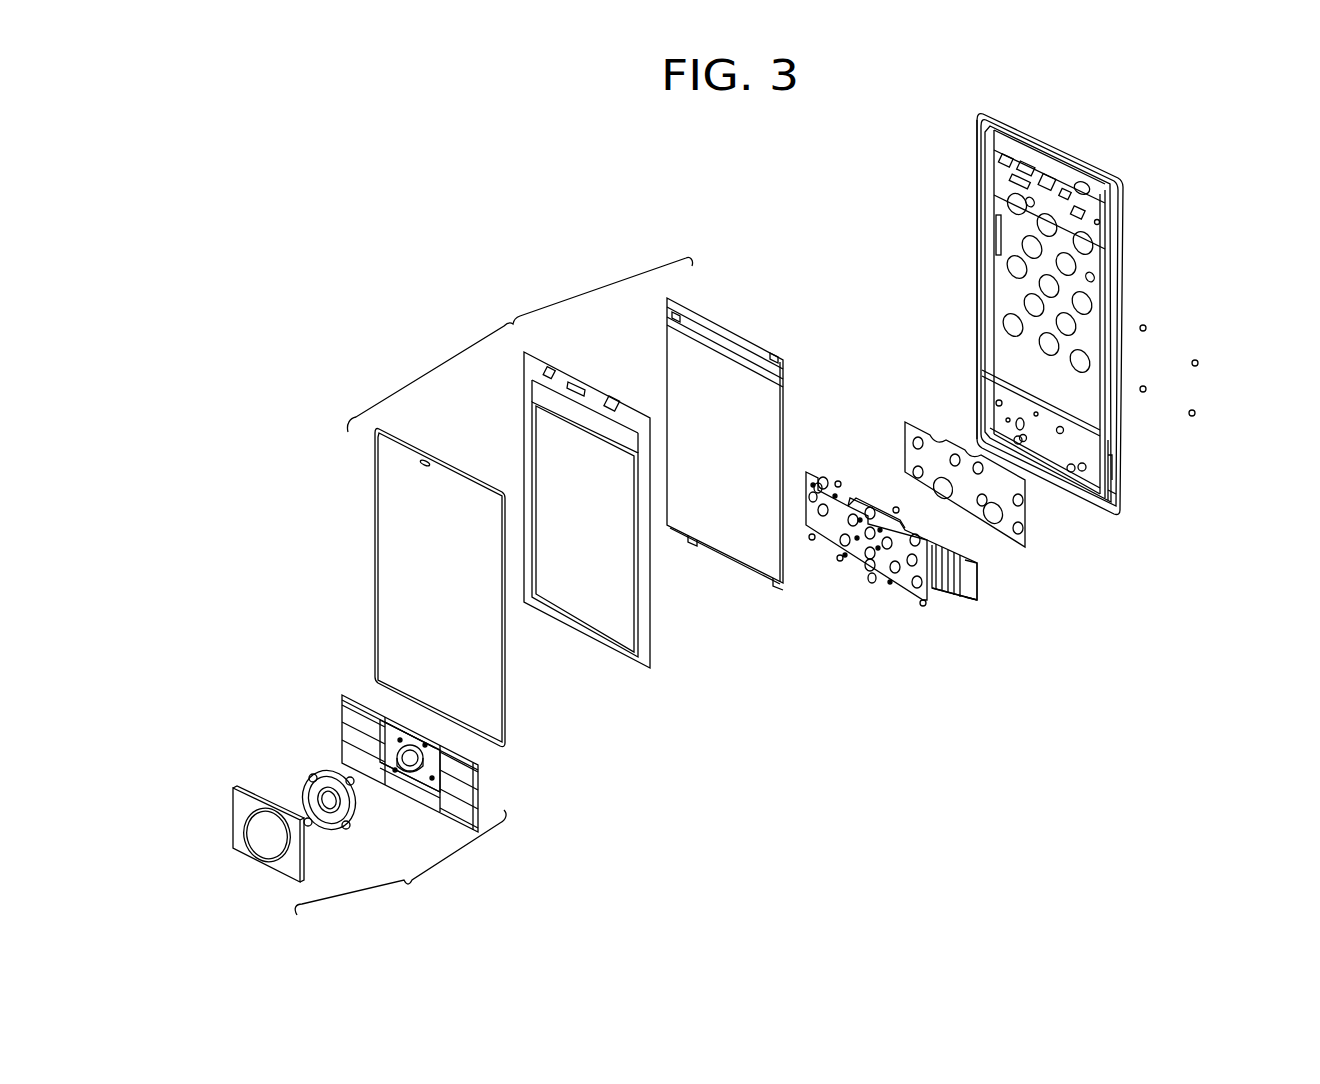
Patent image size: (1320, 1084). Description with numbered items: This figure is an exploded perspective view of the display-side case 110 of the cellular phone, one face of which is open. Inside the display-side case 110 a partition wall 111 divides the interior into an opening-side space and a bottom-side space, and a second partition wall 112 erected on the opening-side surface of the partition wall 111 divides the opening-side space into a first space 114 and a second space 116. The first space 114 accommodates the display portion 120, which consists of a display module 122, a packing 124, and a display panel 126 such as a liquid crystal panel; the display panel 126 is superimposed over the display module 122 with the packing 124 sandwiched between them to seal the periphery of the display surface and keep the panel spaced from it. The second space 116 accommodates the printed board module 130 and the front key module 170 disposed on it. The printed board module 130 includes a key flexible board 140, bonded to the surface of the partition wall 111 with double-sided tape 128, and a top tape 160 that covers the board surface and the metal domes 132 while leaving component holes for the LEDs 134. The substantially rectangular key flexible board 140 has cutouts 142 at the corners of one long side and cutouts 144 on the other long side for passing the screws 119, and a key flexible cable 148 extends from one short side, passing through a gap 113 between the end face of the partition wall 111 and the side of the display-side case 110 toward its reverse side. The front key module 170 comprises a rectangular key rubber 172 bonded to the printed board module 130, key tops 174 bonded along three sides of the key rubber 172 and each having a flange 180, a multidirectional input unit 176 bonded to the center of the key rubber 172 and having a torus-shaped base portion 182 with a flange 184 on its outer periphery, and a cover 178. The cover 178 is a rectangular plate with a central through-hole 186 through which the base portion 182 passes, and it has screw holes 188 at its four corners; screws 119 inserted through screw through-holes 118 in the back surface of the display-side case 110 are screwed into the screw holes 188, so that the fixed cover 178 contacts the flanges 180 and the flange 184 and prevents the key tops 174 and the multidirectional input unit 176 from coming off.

The display-side case 110 is at (1072, 163).
The partition wall 111 is at (1117, 490).
The partition wall 112 is at (1018, 383).
The gap 113 is at (1124, 460).
The first space 114 is at (1035, 389).
The second space 116 is at (1035, 454).
The screw through-holes 118 is at (1016, 437).
The screws 119 is at (1143, 325).
The display portion 120 is at (519, 344).
The display module 122 is at (740, 330).
The packing 124 is at (566, 373).
The display panel 126 is at (420, 450).
The double-sided tape 128 is at (993, 546).
The printed board module 130 is at (927, 604).
The metal domes 132 is at (822, 486).
The LEDs 134 is at (878, 513).
The key flexible board 140 is at (937, 537).
The cutouts 142 is at (812, 540).
The cutouts 144 is at (838, 482).
The key flexible cable 148 is at (978, 598).
The top tape 160 is at (840, 561).
The front key module 170 is at (400, 864).
The key rubber 172 is at (400, 722).
The key tops 174 is at (347, 713).
The multidirectional input unit 176 is at (358, 820).
The cover 178 is at (238, 804).
The flange 180 is at (404, 765).
The base portion 182 is at (308, 784).
The flange 184 is at (328, 773).
The through-hole 186 is at (258, 831).
The screw holes 188 is at (250, 793).